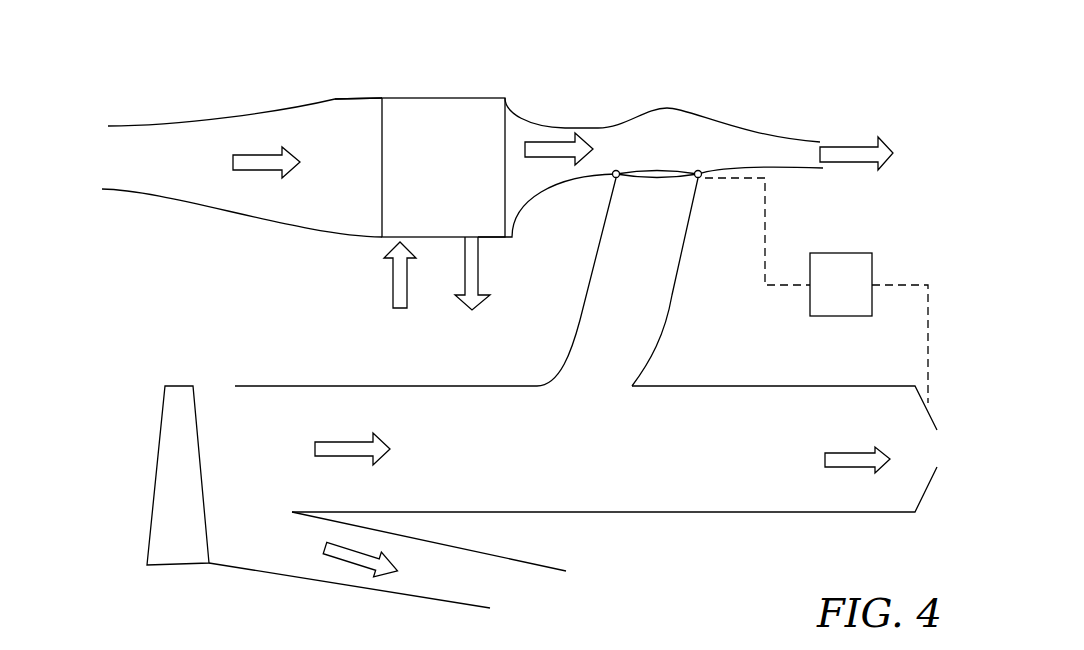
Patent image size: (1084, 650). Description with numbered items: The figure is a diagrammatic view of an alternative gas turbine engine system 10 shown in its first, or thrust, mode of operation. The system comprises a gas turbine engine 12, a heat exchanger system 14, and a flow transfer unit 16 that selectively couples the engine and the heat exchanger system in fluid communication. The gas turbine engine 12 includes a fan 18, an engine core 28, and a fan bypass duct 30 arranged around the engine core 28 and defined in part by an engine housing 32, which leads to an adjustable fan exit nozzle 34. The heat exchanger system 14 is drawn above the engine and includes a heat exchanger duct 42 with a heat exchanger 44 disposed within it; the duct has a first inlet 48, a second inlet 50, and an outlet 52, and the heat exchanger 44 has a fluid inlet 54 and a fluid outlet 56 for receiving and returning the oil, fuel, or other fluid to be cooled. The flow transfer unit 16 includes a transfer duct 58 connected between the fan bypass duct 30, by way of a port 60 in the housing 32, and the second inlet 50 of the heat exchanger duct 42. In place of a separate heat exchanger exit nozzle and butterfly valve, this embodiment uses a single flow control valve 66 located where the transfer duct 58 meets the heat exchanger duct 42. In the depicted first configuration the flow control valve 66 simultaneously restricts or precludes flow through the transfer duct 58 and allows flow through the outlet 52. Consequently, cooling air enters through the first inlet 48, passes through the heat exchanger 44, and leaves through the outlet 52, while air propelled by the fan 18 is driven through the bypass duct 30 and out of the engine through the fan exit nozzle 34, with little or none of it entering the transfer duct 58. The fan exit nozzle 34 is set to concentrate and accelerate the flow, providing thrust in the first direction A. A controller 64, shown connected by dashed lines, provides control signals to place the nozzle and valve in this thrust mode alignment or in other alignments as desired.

The gas turbine engine system 10 is at (96, 86).
The gas turbine engine 12 is at (145, 444).
The heat exchanger system 14 is at (487, 78).
The flow transfer unit 16 is at (693, 312).
The fan 18 is at (198, 501).
The engine core 28 is at (387, 560).
The fan bypass duct 30 is at (583, 475).
The engine housing 32 is at (336, 385).
The fan exit nozzle 34 is at (927, 488).
The heat exchanger duct 42 is at (336, 97).
The heat exchanger 44 is at (462, 181).
The first inlet 48 is at (120, 164).
The second inlet 50 is at (640, 190).
The outlet 52 is at (827, 142).
The fluid inlet 54 is at (392, 290).
The fluid outlet 56 is at (465, 272).
The transfer duct 58 is at (648, 282).
The port 60 is at (592, 376).
The controller 64 is at (858, 298).
The flow control valve 66 is at (670, 182).
The first direction A is at (852, 472).